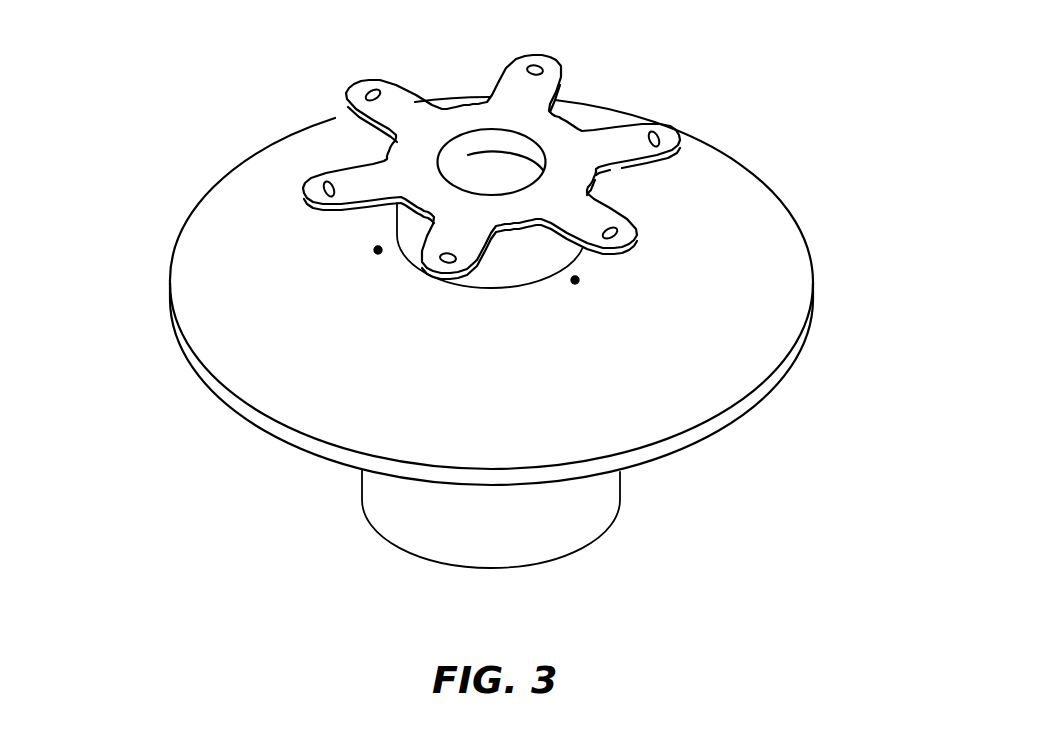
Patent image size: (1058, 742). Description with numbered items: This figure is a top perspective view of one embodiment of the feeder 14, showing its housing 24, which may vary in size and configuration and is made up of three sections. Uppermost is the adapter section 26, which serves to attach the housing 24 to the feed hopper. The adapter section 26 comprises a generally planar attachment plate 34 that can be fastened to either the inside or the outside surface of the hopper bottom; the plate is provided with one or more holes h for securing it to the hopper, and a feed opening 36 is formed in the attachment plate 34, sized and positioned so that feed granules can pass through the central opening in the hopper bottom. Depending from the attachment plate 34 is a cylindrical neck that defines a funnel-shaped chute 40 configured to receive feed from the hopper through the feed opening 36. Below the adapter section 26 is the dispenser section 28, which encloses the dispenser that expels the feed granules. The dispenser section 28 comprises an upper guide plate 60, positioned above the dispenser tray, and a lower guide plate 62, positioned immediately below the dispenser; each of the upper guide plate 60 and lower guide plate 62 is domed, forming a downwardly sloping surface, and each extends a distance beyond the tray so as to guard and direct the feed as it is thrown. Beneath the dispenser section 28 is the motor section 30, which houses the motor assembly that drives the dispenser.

The feeder 14 is at (776, 106).
The housing 24 is at (806, 376).
The adapter section 26 is at (555, 68).
The dispenser section 28 is at (785, 278).
The motor section 30 is at (410, 508).
The attachment plate 34 is at (387, 115).
The feed opening 36 is at (462, 147).
The chute 40 is at (513, 172).
The upper guide plate 60 is at (205, 267).
The lower guide plate 62 is at (727, 422).
The holes h is at (323, 183).